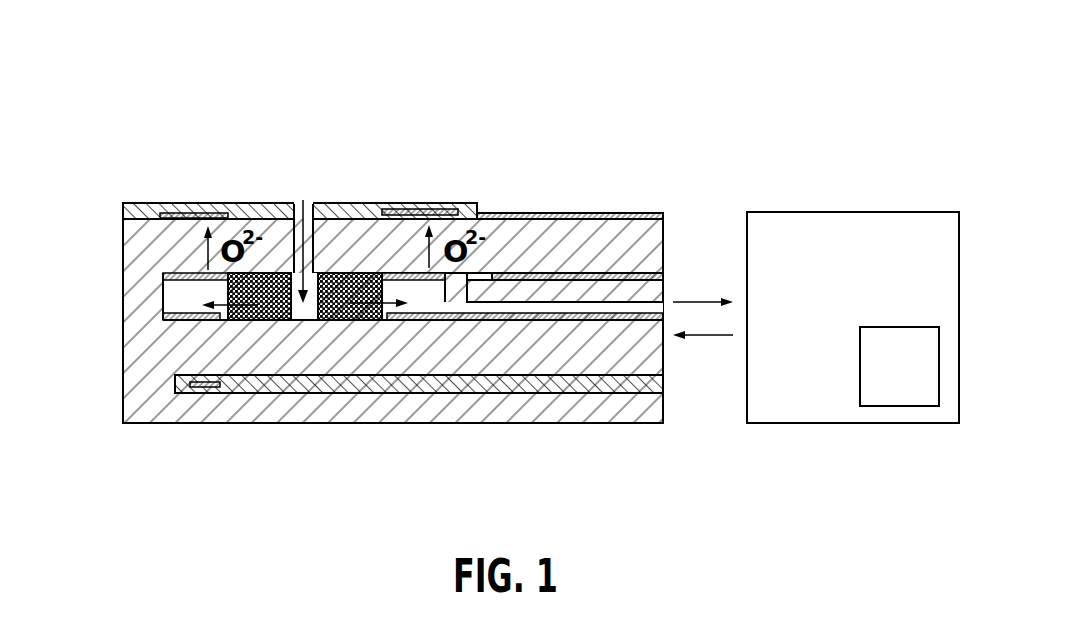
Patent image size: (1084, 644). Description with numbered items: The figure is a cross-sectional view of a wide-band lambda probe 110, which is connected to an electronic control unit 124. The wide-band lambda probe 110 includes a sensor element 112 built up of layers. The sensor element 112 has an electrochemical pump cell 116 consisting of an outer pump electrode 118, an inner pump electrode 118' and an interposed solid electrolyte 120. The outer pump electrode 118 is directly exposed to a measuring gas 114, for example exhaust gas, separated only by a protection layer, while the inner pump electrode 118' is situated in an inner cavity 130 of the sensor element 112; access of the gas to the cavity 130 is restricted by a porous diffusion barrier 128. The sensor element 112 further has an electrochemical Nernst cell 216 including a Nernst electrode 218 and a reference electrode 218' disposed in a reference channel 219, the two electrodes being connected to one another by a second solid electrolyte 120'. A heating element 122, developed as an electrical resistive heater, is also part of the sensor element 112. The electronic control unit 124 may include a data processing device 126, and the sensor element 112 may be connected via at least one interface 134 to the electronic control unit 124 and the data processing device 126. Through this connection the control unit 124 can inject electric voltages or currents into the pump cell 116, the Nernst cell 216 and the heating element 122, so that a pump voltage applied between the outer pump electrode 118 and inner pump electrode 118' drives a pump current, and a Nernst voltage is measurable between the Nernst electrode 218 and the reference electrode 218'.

The wide-band lambda probe 110 is at (610, 166).
The sensor element 112 is at (122, 390).
The measuring gas 114 is at (298, 147).
The electrochemical pump cell 116 is at (178, 257).
The outer pump electrode 118 is at (324, 175).
The inner pump electrode 118' is at (246, 245).
The solid electrolyte 120 is at (488, 197).
The second solid electrolyte 120' is at (413, 393).
The heating element 122 is at (200, 388).
The electronic control unit 124 is at (902, 227).
The data processing device 126 is at (890, 398).
The porous diffusion barrier 128 is at (337, 316).
The inner cavity 130 is at (177, 297).
The interface 134 is at (698, 289).
The electrochemical Nernst cell 216 is at (507, 240).
The Nernst electrode 218 is at (356, 396).
The reference electrode 218' is at (565, 202).
The reference channel 219 is at (632, 288).